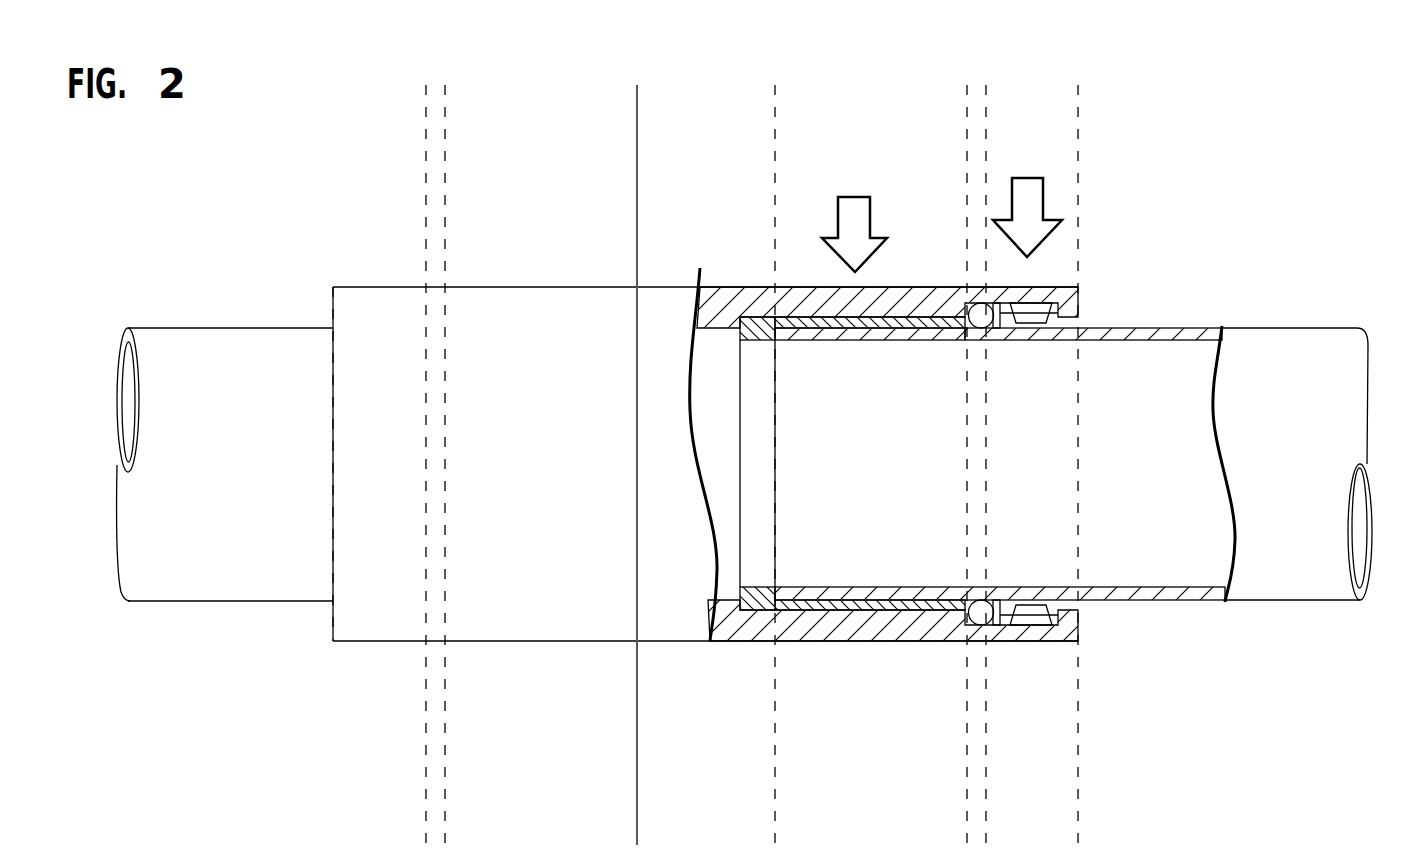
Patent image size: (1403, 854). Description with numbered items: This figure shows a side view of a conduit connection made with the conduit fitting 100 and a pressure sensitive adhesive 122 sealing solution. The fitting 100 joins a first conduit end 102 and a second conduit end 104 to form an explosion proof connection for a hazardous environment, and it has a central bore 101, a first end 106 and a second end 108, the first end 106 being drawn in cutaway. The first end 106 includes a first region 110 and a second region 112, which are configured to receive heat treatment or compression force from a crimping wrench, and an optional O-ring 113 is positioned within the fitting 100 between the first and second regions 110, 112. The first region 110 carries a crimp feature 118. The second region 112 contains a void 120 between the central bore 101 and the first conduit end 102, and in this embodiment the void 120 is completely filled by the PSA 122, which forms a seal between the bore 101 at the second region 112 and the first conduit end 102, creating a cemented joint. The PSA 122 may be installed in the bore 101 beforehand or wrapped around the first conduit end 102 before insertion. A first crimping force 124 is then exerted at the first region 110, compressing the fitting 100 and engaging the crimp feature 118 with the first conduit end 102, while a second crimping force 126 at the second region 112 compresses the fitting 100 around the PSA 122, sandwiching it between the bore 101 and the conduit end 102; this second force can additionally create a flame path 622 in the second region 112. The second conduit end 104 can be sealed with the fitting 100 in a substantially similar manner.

The conduit fitting 100 is at (672, 612).
The central bore 101 is at (711, 324).
The first conduit end 102 is at (1320, 348).
The second conduit end 104 is at (186, 565).
The first end 106 is at (875, 642).
The second end 108 is at (408, 515).
The first region 110 is at (1041, 114).
The second region 112 is at (851, 108).
The O-ring 113 is at (982, 613).
The crimp feature 118 is at (1020, 322).
The void 120 is at (767, 312).
The pressure sensitive adhesive 122 is at (806, 322).
The first crimping force 124 is at (1028, 197).
The second crimping force 126 is at (853, 222).
The flame path 622 is at (888, 330).